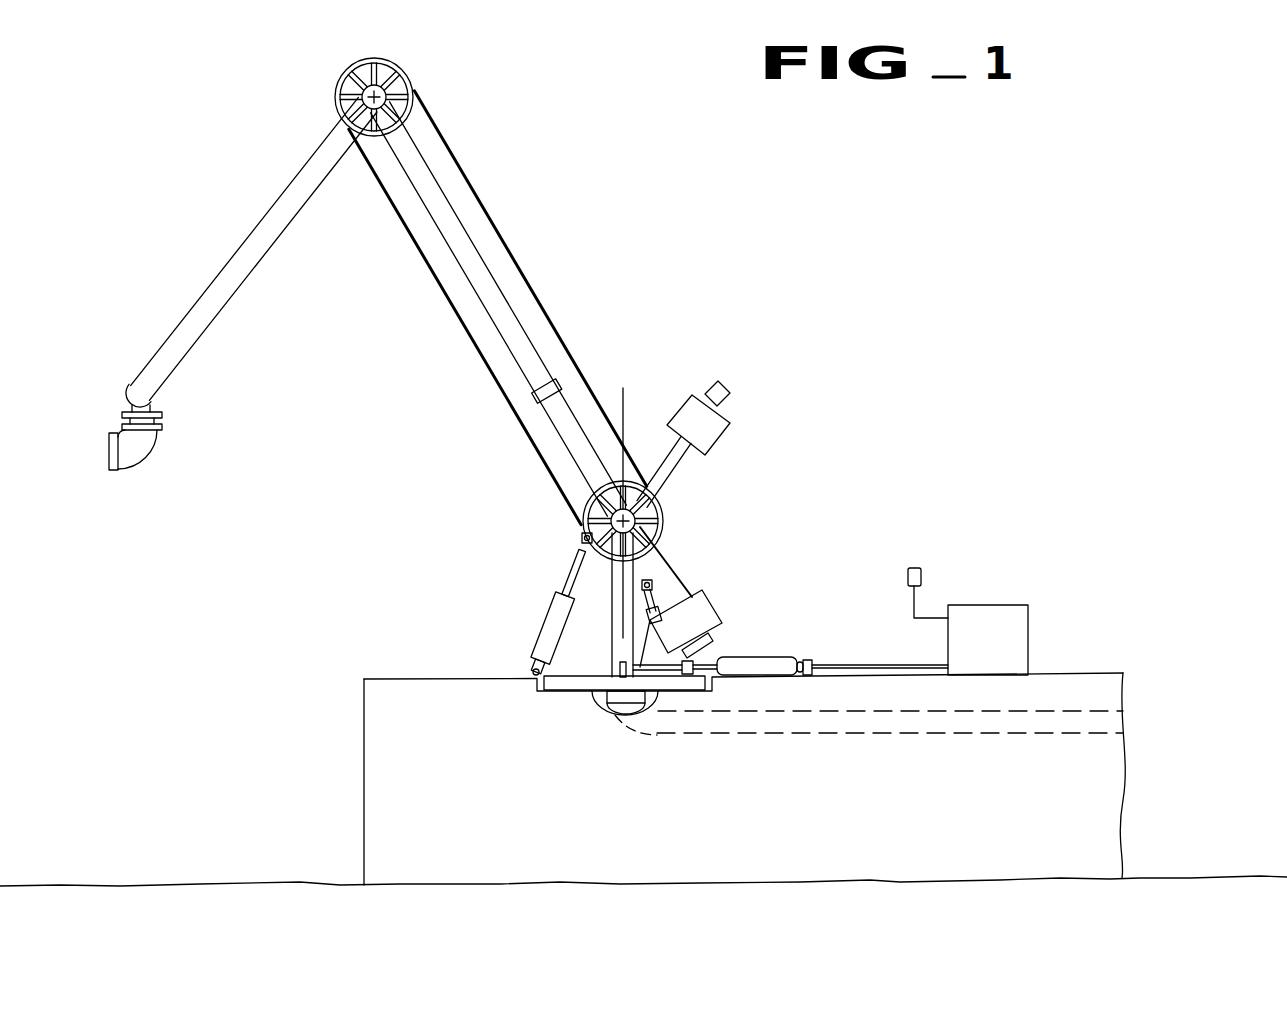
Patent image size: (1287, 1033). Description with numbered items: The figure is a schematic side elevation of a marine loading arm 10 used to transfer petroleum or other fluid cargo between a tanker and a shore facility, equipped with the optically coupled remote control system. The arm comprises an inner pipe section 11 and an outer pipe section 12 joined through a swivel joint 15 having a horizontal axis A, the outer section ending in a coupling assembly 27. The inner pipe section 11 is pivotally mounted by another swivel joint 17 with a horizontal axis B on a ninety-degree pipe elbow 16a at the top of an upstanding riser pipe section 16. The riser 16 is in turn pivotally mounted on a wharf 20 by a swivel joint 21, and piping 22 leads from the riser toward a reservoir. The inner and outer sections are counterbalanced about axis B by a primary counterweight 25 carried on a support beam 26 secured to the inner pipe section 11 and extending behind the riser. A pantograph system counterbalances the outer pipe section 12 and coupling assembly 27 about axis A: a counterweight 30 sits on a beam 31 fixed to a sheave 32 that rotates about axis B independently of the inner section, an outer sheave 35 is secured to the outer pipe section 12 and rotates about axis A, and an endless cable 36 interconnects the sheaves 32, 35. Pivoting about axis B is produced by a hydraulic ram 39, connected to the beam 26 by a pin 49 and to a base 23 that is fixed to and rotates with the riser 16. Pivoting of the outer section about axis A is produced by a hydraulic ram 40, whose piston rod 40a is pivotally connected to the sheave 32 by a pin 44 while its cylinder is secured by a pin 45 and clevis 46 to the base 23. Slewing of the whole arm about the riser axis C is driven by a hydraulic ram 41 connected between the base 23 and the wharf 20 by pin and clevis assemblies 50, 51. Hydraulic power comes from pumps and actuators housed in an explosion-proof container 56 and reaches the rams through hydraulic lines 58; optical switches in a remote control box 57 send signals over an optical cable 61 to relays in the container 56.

The marine loading arm 10 is at (533, 194).
The inner pipe section 11 is at (474, 245).
The outer pipe section 12 is at (265, 216).
The swivel joint 15 is at (395, 85).
The riser pipe section 16 is at (617, 600).
The pipe elbow 16a is at (650, 528).
The swivel joint 17 is at (647, 520).
The wharf 20 is at (492, 775).
The swivel joint 21 is at (612, 700).
The piping 22 is at (852, 737).
The base 23 is at (545, 686).
The primary counterweight 25 is at (712, 607).
The support beam 26 is at (660, 557).
The coupling assembly 27 is at (153, 447).
The counterweight 30 is at (710, 453).
The beam 31 is at (727, 404).
The sheave 32 is at (660, 504).
The outer sheave 35 is at (340, 68).
The endless cable 36 is at (437, 128).
The hydraulic ram 39 is at (636, 637).
The hydraulic ram 40 is at (557, 597).
The piston rod 40a is at (582, 562).
The hydraulic ram 41 is at (765, 657).
The pin 44 is at (583, 539).
The pin 45 is at (550, 660).
The clevis 46 is at (530, 670).
The pin 49 is at (657, 583).
The pin and clevis assembly 50 is at (700, 660).
The pin and clevis assembly 51 is at (808, 660).
The explosion-proof container 56 is at (1000, 649).
The remote control box 57 is at (922, 574).
The hydraulic lines 58 is at (880, 665).
The optical cable 61 is at (916, 600).
The horizontal axis A is at (370, 99).
The horizontal axis B is at (600, 518).
The riser axis C is at (624, 398).